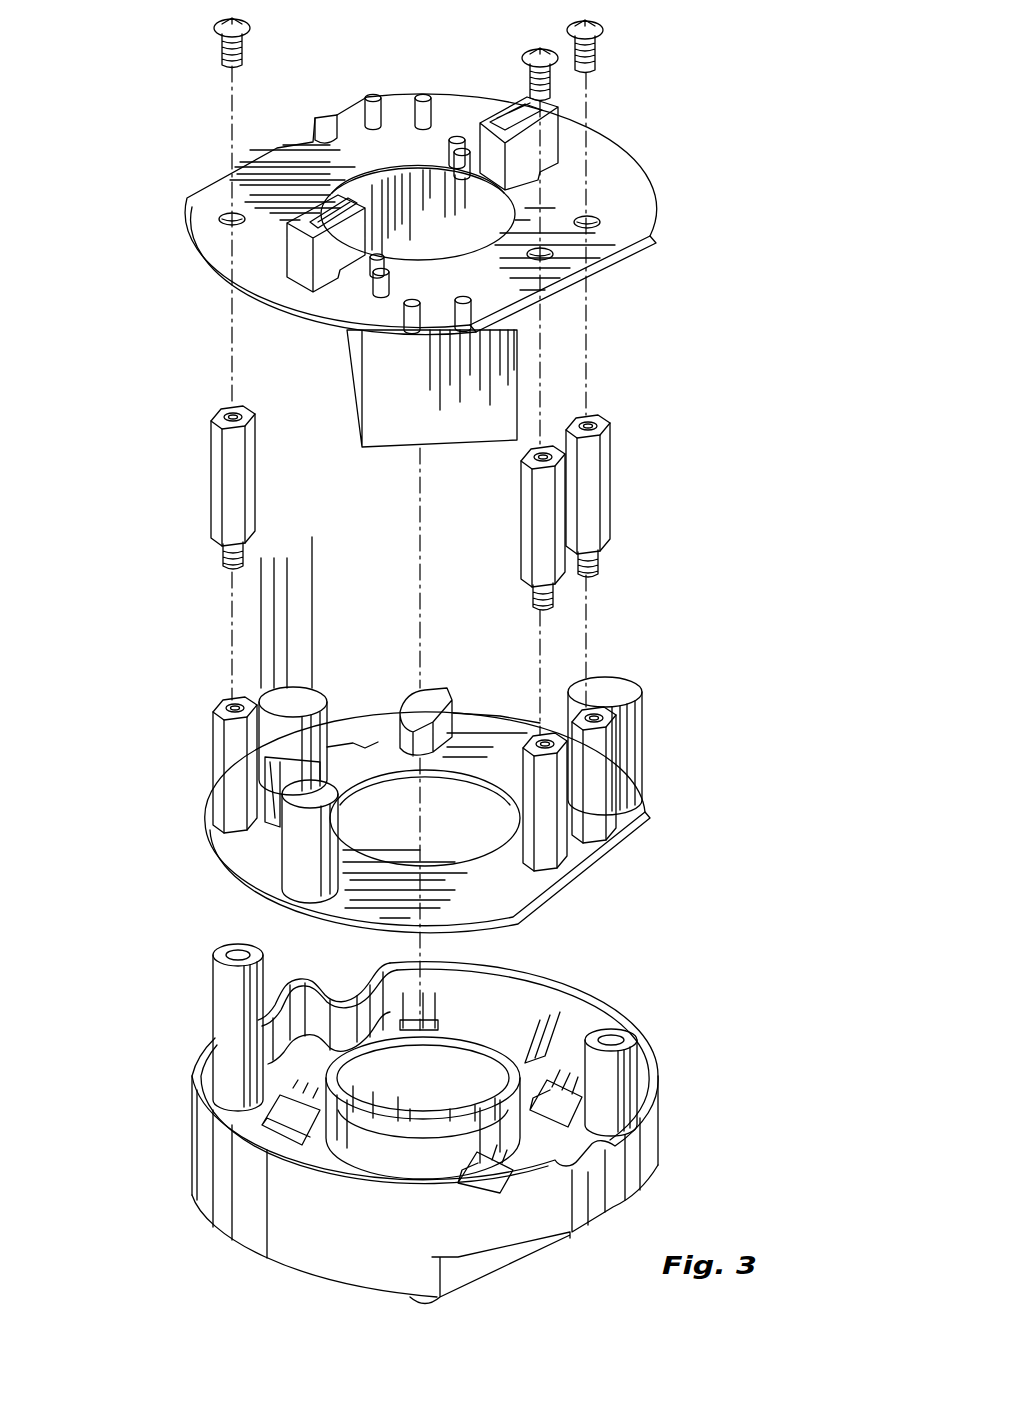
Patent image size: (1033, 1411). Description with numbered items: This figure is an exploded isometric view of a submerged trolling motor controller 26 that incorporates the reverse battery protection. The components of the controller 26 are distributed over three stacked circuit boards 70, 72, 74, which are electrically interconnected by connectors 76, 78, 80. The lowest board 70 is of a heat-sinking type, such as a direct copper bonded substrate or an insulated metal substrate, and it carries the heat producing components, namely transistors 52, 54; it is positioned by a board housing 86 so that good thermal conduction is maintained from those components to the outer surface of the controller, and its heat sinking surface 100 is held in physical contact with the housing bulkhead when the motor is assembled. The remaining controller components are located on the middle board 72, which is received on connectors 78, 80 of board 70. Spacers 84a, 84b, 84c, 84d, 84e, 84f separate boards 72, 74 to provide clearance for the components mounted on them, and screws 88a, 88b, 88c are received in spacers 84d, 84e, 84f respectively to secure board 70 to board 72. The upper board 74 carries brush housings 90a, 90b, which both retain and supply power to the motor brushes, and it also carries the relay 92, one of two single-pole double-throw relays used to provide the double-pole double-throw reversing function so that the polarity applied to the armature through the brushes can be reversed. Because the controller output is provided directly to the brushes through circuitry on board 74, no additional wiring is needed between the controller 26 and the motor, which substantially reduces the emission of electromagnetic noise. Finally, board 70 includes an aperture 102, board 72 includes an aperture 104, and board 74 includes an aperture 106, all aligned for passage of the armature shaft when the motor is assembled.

The controller 26 is at (467, 264).
The transistor 52 is at (286, 1112).
The transistor 54 is at (490, 1176).
The circuit board 70 is at (428, 1120).
The circuit board 72 is at (636, 815).
The circuit board 74 is at (653, 200).
The connector 76 is at (313, 585).
The connector 78 is at (437, 1000).
The connector 80 is at (563, 1057).
The spacer 84a is at (226, 739).
The spacer 84b is at (559, 841).
The spacer 84c is at (606, 815).
The spacer 84d is at (213, 470).
The spacer 84e is at (523, 571).
The spacer 84f is at (605, 493).
The board housing 86 is at (660, 1110).
The screw 88a is at (222, 37).
The screw 88b is at (527, 70).
The screw 88c is at (600, 52).
The brush housing 90a is at (296, 262).
The brush housing 90b is at (553, 132).
The single-pole double-throw relay 92 is at (478, 208).
The heat sinking surface 100 is at (470, 1296).
The aperture 102 is at (444, 1095).
The aperture 104 is at (445, 831).
The aperture 106 is at (442, 240).